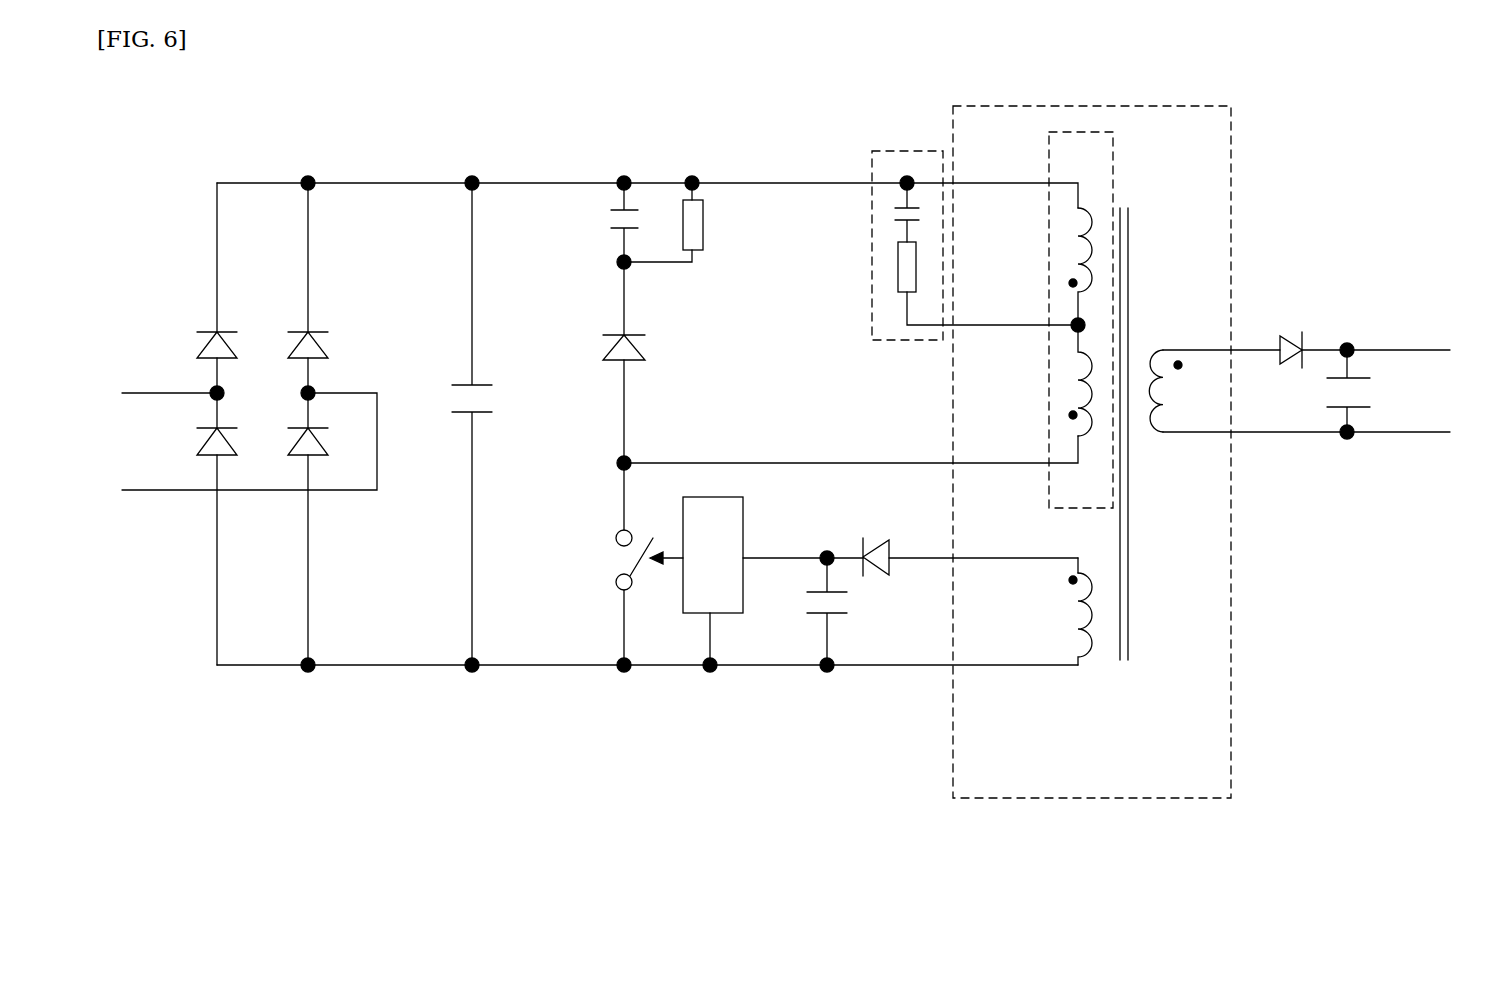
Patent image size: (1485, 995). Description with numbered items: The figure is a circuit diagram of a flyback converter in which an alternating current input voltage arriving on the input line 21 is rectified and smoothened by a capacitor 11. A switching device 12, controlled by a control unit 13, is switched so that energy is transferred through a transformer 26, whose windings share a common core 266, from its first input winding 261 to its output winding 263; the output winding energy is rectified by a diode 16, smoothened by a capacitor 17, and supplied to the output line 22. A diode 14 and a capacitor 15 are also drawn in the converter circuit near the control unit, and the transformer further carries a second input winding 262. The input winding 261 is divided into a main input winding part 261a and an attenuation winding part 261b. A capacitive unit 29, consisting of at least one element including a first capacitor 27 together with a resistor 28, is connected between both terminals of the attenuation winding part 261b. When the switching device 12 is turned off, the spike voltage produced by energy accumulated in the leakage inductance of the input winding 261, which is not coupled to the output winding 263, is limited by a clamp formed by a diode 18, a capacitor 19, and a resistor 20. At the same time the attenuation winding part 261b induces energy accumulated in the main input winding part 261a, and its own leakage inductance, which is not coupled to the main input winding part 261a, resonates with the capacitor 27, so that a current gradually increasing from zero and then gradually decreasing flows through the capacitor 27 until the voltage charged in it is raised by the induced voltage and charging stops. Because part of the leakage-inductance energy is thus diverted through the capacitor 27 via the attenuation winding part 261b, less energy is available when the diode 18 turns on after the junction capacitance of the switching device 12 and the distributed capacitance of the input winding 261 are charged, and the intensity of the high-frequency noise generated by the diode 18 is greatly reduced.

The capacitor 11 is at (452, 425).
The switching device 12 is at (600, 550).
The control unit 13 is at (745, 527).
The diode 14 is at (870, 530).
The capacitor 15 is at (815, 627).
The diode 16 is at (1301, 320).
The capacitor 17 is at (1372, 393).
The diode 18 is at (605, 378).
The capacitor 19 is at (600, 222).
The resistor 20 is at (703, 190).
The input line 21 is at (420, 677).
The output line 22 is at (1385, 440).
The transformer 26 is at (940, 128).
The first capacitor 27 is at (880, 218).
The resistor 28 is at (890, 270).
The capacitive unit 29 is at (885, 345).
The first input winding 261 is at (1128, 157).
The main input winding part 261a is at (1068, 372).
The attenuation winding part 261b is at (1068, 255).
The second input winding 262 is at (1068, 607).
The output winding 263 is at (1158, 423).
The core 266 is at (1128, 675).